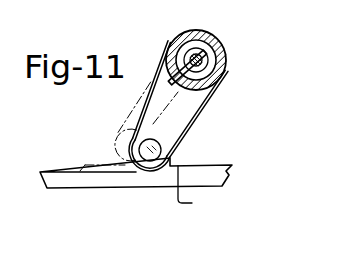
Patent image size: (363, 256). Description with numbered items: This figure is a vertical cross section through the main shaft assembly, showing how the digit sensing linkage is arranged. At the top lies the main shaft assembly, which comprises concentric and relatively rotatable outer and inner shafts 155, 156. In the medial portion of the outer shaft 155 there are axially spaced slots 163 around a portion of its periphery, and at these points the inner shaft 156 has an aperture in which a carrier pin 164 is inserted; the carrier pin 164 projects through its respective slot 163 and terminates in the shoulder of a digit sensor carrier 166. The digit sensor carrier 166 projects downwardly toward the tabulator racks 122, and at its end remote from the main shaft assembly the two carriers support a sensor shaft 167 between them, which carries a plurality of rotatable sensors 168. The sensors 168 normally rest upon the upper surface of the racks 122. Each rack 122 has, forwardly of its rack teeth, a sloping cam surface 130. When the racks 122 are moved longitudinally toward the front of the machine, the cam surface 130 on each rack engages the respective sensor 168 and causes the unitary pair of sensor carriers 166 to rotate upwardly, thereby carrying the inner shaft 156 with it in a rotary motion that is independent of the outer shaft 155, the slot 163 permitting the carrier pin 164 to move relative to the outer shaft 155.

The tabulator rack 122 is at (142, 182).
The sloping cam surface 130 is at (202, 190).
The outer shaft 155 is at (213, 50).
The inner shaft 156 is at (192, 37).
The slot 163 is at (177, 63).
The carrier pin 164 is at (176, 84).
The digit sensor carrier 166 is at (196, 108).
The sensor shaft 167 is at (160, 149).
The sensor 168 is at (171, 163).